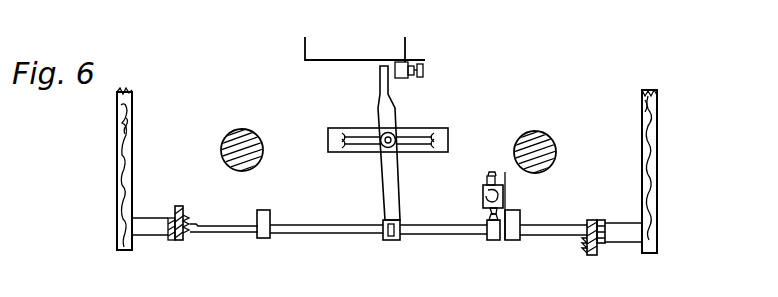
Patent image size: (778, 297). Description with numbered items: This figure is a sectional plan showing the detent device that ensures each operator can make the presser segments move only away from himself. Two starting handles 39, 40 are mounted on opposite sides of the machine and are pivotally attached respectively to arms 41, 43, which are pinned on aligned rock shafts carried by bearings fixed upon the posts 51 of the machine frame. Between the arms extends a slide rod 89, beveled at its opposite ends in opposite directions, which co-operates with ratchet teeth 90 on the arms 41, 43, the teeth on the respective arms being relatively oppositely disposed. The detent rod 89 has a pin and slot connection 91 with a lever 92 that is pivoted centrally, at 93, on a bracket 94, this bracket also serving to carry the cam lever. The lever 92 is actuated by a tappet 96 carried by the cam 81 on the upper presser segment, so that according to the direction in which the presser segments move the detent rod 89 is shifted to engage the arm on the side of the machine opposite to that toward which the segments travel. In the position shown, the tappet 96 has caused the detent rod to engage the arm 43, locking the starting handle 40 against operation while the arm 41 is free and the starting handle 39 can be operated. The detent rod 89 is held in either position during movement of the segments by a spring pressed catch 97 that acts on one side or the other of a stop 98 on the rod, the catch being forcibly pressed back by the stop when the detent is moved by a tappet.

The starting handle 39 is at (118, 130).
The starting handle 40 is at (655, 118).
The arm 41 is at (153, 227).
The arm 43 is at (613, 226).
The post 51 is at (253, 135).
The cam 81 is at (337, 48).
The slide rod 89 is at (318, 226).
The ratchet teeth 90 is at (590, 226).
The pin and slot connection 91 is at (400, 225).
The lever 92 is at (392, 201).
The pivot 93 is at (397, 136).
The bracket 94 is at (351, 121).
The tappet 96 is at (404, 70).
The spring pressed catch 97 is at (490, 222).
The stop 98 is at (511, 227).